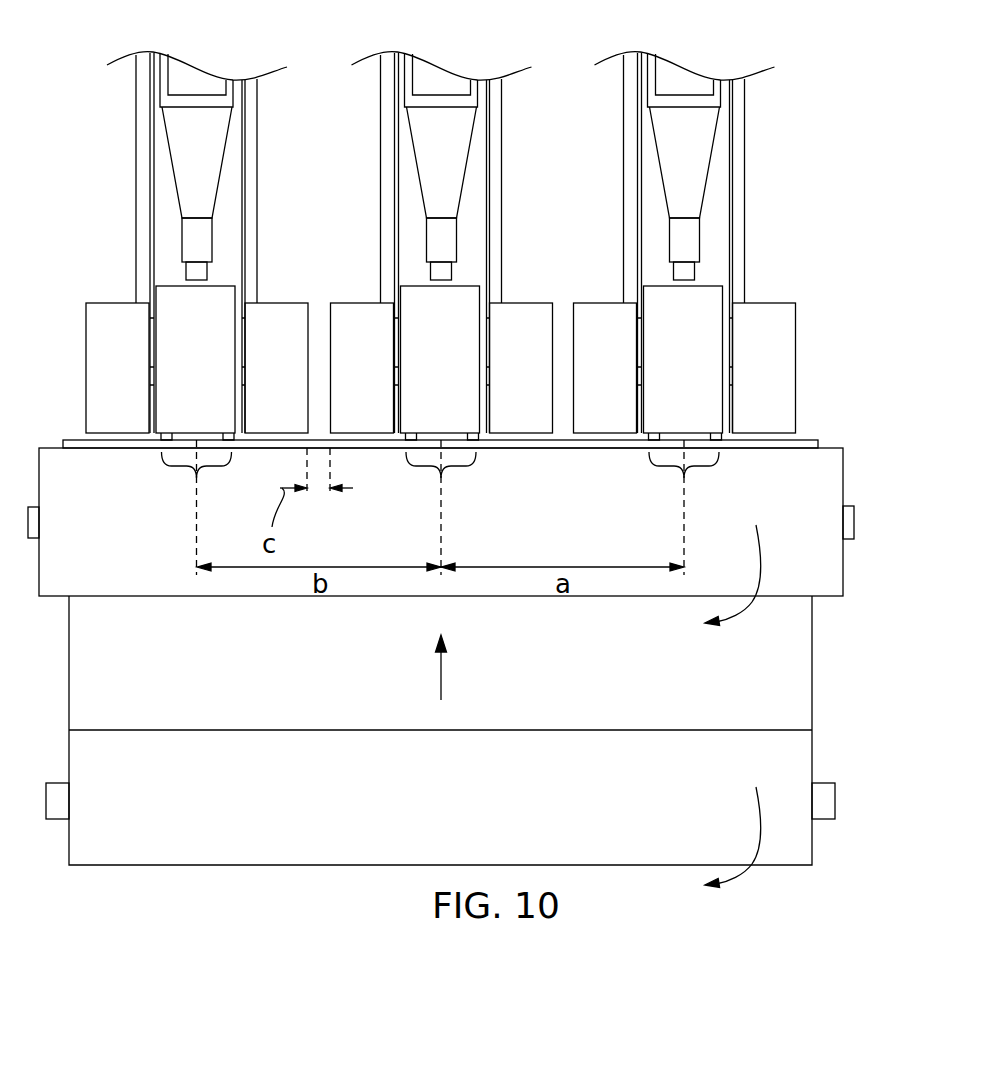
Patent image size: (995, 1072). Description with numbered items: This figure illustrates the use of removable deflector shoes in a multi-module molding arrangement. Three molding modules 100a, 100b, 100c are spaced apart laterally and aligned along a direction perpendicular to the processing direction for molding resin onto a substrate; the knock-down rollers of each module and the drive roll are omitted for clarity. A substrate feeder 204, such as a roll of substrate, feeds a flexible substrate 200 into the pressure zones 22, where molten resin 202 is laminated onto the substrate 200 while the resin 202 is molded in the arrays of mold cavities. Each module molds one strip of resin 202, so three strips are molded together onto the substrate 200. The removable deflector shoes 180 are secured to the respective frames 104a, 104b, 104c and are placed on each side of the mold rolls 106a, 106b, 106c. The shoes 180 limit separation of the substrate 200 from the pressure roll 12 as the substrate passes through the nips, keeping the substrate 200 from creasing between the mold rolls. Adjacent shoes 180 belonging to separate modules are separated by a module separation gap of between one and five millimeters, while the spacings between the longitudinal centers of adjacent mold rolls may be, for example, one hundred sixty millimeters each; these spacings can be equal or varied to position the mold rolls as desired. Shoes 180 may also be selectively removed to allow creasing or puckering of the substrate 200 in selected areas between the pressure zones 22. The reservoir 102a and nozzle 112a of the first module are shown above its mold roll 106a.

The molding module 100a is at (218, 219).
The molding module 100b is at (434, 219).
The molding module 100c is at (677, 219).
The frame 104a is at (145, 128).
The frame 104b is at (386, 121).
The frame 104c is at (632, 123).
The reservoir 102a is at (232, 90).
The nozzle 112a is at (193, 148).
The mold roll 106a is at (167, 373).
The mold roll 106b is at (412, 373).
The mold roll 106c is at (654, 373).
The removable deflector shoe 180 is at (110, 315).
The flexible substrate 200 is at (74, 440).
The resin 202 is at (170, 437).
The substrate feeder 204 is at (165, 850).
The pressure roll 12 is at (822, 480).
The pressure zone 22 is at (196, 478).